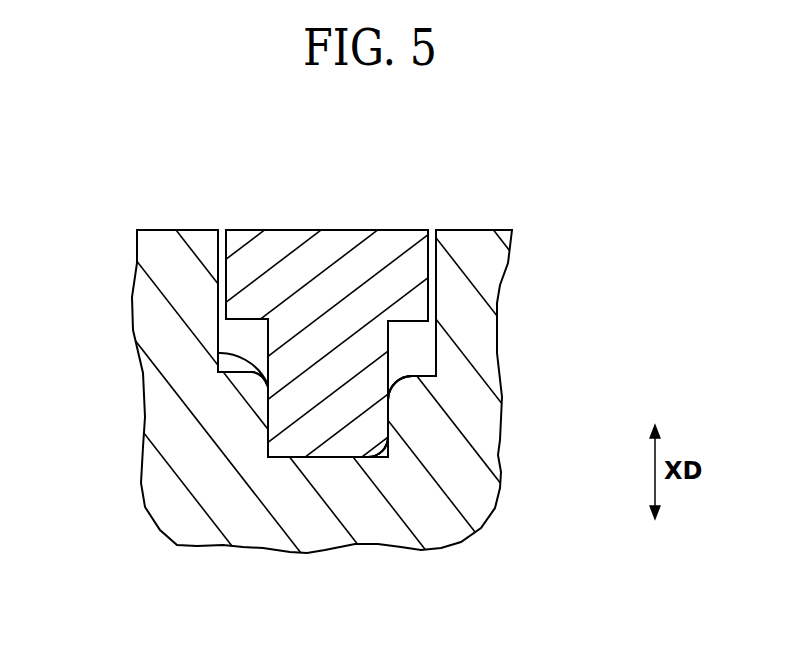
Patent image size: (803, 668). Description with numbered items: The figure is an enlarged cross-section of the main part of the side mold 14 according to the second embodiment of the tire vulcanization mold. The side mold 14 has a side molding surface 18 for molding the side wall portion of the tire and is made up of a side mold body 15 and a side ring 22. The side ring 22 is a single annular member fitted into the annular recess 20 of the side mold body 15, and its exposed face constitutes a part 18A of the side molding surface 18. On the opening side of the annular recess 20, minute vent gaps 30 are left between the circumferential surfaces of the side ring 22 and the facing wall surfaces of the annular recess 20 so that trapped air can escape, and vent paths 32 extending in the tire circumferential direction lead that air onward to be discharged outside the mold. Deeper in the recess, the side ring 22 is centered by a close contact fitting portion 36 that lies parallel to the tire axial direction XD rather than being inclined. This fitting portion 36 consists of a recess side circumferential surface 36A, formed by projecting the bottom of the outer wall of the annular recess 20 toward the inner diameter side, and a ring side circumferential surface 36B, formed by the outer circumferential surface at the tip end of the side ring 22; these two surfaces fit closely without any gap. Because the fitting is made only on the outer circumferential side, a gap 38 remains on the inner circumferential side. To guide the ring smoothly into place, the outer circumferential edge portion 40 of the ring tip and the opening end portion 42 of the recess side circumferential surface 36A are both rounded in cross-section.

The side mold 14 is at (480, 246).
The side mold body 15 is at (502, 481).
The side molding surface 18 is at (164, 226).
The part of the side molding surface 18A is at (304, 226).
The annular recess 20 is at (435, 348).
The side ring 22 is at (352, 246).
The vent gap 30 is at (218, 283).
The vent path 32 is at (226, 333).
The close contact fitting portion 36 is at (272, 430).
The recess side circumferential surface 36A is at (270, 443).
The ring side circumferential surface 36B is at (266, 398).
The gap 38 is at (392, 422).
The outer circumferential edge portion 40 is at (271, 445).
The opening end portion 42 is at (232, 358).